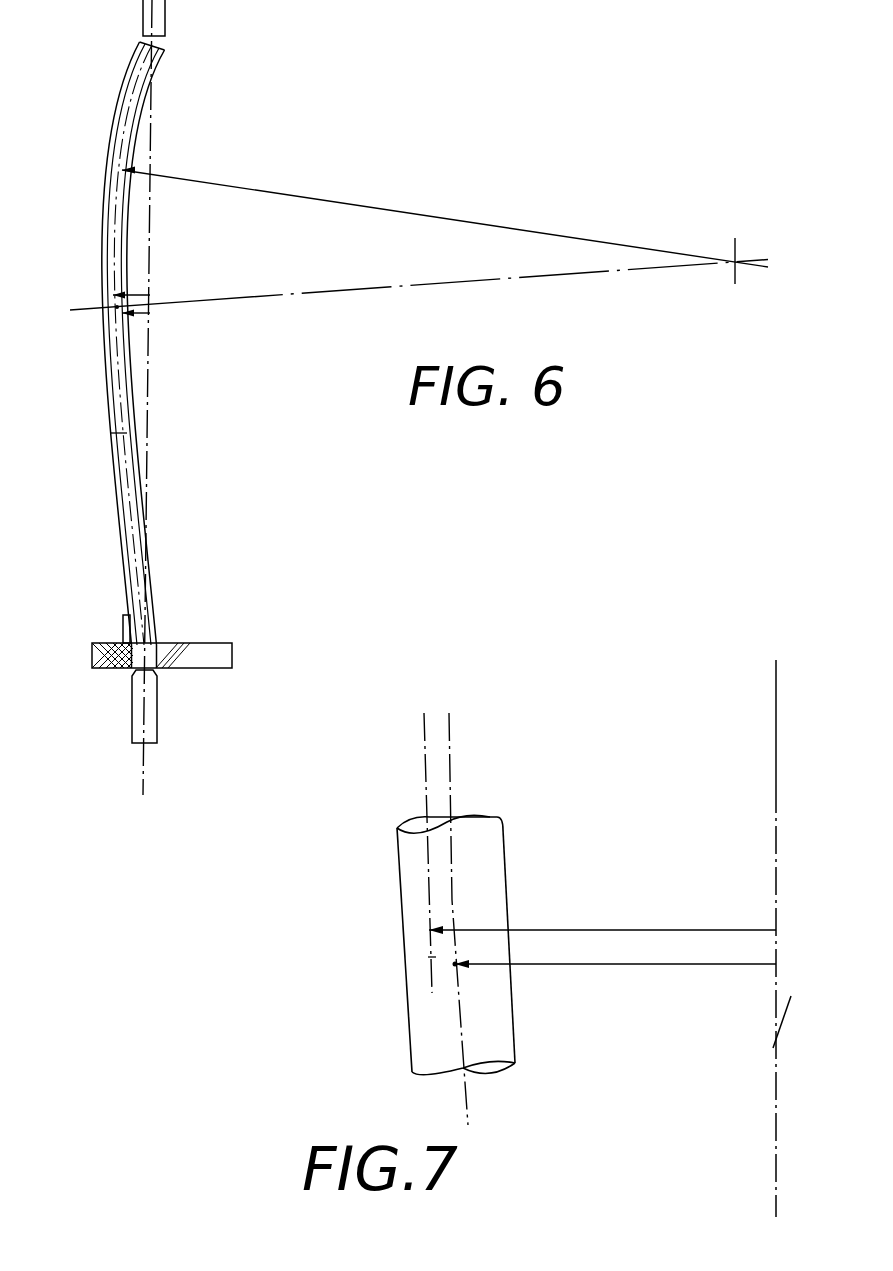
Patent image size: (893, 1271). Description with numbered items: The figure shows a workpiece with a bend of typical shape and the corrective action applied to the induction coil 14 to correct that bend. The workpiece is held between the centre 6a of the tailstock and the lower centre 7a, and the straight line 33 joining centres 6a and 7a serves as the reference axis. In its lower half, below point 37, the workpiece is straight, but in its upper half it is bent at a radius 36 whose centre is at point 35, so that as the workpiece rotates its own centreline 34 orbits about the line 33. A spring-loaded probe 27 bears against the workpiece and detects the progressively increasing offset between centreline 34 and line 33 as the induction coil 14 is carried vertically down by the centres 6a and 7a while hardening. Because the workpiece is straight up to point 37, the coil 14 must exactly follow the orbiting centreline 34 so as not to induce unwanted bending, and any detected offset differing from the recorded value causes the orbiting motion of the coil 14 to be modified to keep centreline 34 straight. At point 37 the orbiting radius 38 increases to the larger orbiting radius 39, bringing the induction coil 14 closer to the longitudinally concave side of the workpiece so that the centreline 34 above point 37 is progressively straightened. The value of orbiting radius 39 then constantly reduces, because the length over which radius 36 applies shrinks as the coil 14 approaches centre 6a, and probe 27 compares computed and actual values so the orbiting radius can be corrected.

In FIG. 6, the centre of tailstock 6a is at (162, 25).
In FIG. 6, the centre 7a is at (152, 700).
In FIG. 6, the induction coil 14 is at (92, 645).
In FIG. 6, the probe 27 is at (123, 617).
In FIG. 6, the line joining centres 33 is at (147, 388).
In FIG. 7, the line joining centres 33 is at (775, 785).
In FIG. 6, the centreline 34 is at (115, 433).
In FIG. 7, the centreline 34 is at (470, 1112).
In FIG. 6, the centre of radius 35 is at (728, 268).
In FIG. 6, the radius 36 is at (380, 208).
In FIG. 6, the point 37 is at (117, 307).
In FIG. 7, the point 37 is at (452, 965).
In FIG. 6, the orbiting radius 38 is at (140, 320).
In FIG. 7, the orbiting radius 38 is at (627, 970).
In FIG. 6, the orbiting radius 39 is at (137, 293).
In FIG. 7, the orbiting radius 39 is at (600, 928).